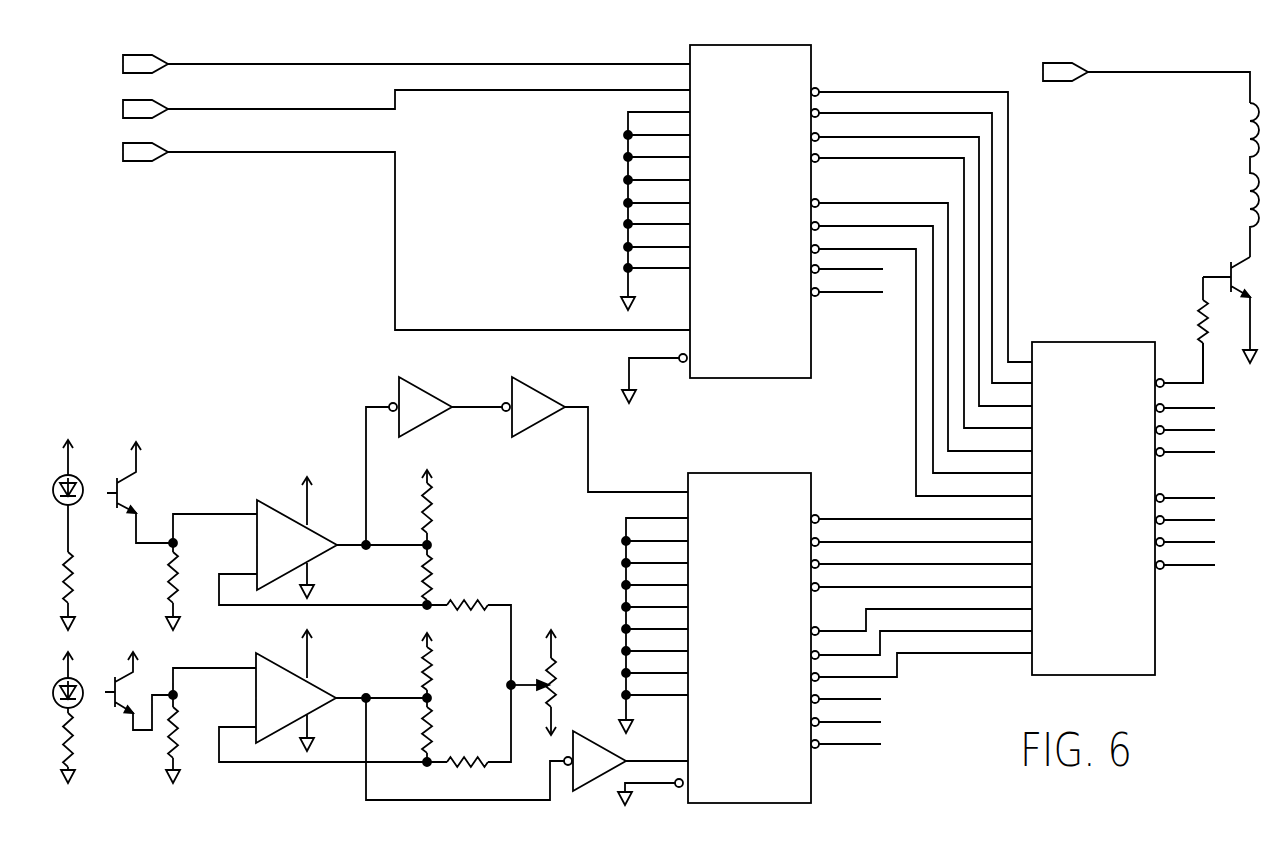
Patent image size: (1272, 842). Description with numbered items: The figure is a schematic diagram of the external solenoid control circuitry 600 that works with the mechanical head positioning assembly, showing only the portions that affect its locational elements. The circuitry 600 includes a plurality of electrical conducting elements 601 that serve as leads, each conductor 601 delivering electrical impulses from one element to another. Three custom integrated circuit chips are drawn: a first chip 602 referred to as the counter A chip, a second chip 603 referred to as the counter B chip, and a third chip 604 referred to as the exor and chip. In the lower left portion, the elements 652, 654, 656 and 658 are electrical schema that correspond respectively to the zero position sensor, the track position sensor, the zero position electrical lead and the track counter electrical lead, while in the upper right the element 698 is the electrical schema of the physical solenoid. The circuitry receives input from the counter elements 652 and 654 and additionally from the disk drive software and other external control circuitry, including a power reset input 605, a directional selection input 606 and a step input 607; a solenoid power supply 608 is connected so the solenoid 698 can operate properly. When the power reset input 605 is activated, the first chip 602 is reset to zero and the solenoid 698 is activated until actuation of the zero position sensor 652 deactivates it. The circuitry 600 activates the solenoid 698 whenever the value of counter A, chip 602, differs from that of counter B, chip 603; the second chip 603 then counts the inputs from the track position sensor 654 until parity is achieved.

The external circuitry 600 is at (914, 66).
The electrical conducting elements 601 is at (490, 90).
The first chip 602 is at (767, 180).
The second chip 603 is at (762, 622).
The third chip 604 is at (1107, 481).
The power reset input 605 is at (153, 62).
The directional selection input 606 is at (122, 108).
The step input 607 is at (122, 152).
The solenoid power supply 608 is at (1066, 72).
The zero position sensor 652 is at (55, 444).
The track position sensor 654 is at (98, 659).
The zero position electrical lead 656 is at (220, 513).
The track counter electrical lead 658 is at (202, 668).
The solenoid 698 is at (1250, 175).